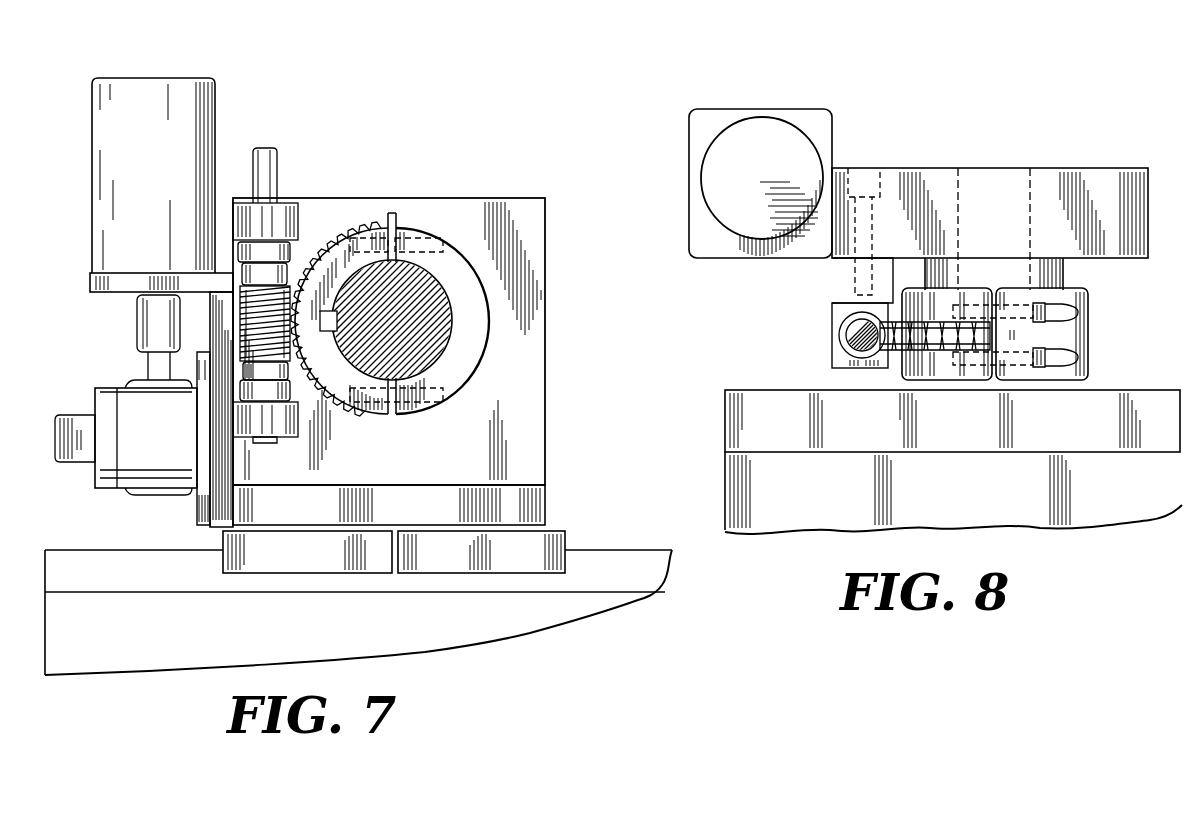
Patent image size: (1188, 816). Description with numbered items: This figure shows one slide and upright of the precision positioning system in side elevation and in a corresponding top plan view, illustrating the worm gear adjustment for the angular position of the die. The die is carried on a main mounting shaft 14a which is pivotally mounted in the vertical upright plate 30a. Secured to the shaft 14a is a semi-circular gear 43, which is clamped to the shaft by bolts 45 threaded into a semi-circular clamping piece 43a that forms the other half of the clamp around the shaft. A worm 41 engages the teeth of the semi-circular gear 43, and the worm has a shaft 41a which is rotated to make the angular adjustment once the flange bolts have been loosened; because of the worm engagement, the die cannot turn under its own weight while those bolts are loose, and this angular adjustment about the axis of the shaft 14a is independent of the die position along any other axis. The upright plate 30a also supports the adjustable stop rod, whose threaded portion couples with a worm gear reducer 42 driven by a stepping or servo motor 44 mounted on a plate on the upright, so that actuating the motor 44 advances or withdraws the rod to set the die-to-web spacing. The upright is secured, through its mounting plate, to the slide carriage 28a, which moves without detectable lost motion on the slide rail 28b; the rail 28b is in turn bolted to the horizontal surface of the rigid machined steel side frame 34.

In FIG. 7, the main mounting shaft 14a is at (442, 292).
In FIG. 8, the main mounting shaft 14a is at (1066, 268).
In FIG. 7, the slide carriage 28a is at (223, 548).
In FIG. 7, the slide rail 28b is at (629, 550).
In FIG. 7, the upright plate 30a is at (546, 314).
In FIG. 7, the side frame 34 is at (378, 627).
In FIG. 7, the worm 41 is at (240, 312).
In FIG. 8, the worm 41 is at (845, 337).
In FIG. 7, the worm shaft 41a is at (278, 160).
In FIG. 7, the worm gear reducer 42 is at (122, 382).
In FIG. 7, the semi-circular gear 43 is at (350, 220).
In FIG. 8, the semi-circular gear 43 is at (888, 368).
In FIG. 7, the semi-circular clamping piece 43a is at (462, 375).
In FIG. 8, the semi-circular clamping piece 43a is at (1089, 337).
In FIG. 7, the stepping or servo motor 44 is at (215, 115).
In FIG. 8, the stepping or servo motor 44 is at (712, 150).
In FIG. 7, the bolts 45 is at (437, 238).
In FIG. 8, the bolts 45 is at (1080, 313).